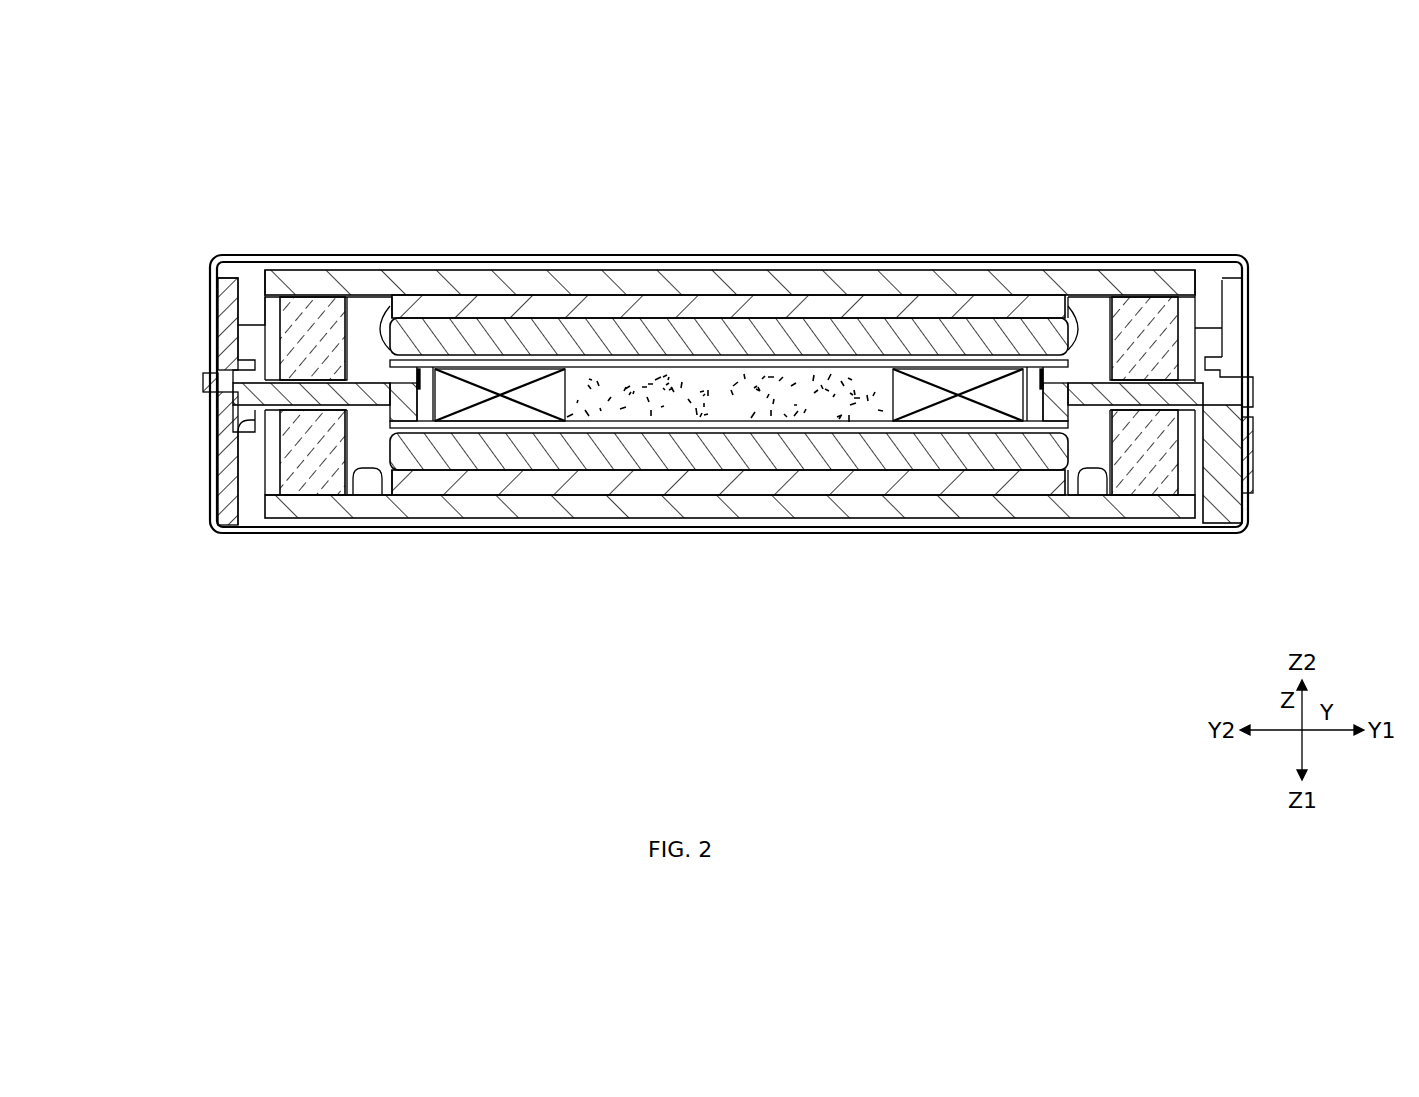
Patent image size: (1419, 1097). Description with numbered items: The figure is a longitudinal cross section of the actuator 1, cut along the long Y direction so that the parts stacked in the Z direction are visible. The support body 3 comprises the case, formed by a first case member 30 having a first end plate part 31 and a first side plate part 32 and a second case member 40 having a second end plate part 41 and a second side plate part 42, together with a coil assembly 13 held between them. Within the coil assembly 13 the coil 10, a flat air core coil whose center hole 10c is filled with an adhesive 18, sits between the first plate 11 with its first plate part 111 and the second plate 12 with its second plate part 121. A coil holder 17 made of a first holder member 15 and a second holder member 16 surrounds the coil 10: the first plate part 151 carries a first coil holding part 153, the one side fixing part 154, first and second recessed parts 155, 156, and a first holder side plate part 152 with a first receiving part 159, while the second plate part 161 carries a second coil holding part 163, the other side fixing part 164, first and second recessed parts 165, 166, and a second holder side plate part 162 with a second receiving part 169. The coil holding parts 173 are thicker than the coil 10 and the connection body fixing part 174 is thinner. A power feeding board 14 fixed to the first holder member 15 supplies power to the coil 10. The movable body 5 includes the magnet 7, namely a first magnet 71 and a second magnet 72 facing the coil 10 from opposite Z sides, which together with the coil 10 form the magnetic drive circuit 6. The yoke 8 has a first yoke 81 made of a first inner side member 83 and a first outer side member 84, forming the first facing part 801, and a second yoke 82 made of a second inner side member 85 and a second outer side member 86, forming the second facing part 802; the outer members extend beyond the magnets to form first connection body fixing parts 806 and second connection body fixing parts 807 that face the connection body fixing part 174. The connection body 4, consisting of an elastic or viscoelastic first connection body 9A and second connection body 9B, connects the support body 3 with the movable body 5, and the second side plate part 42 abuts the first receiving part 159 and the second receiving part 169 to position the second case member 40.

The actuator 1 is at (150, 115).
The support body 3 is at (205, 273).
The connection body 4 is at (729, 396).
The movable body 5 is at (450, 270).
The magnetic drive circuit 6 is at (612, 127).
The magnet 7 is at (637, 165).
The yoke 8 is at (938, 127).
The first connection body 9A is at (315, 480).
The second connection body 9B is at (340, 308).
The coil 10 is at (477, 380).
The center hole 10c is at (582, 400).
The first plate 11 is at (729, 424).
The second plate 12 is at (729, 363).
The coil assembly 13 is at (647, 430).
The power feeding board 14 is at (1255, 460).
The first holder member 15 is at (1345, 445).
The second holder member 16 is at (95, 445).
The coil holder 17 is at (310, 401).
The adhesive 18 is at (750, 387).
The first case member 30 is at (1162, 540).
The first end plate part 31 is at (818, 533).
The first side plate part 32 is at (1248, 513).
The second case member 40 is at (1218, 252).
The second end plate part 41 is at (1165, 265).
The second side plate part 42 is at (1248, 335).
The first magnet 71 is at (627, 440).
The second magnet 72 is at (562, 337).
The first yoke 81 is at (955, 165).
The second yoke 82 is at (858, 165).
The first inner side member 83 is at (912, 470).
The first outer side member 84 is at (958, 500).
The second inner side member 85 is at (840, 312).
The second outer side member 86 is at (793, 290).
The first plate part 111 is at (602, 417).
The second plate part 121 is at (718, 367).
The first plate part 151 is at (1163, 388).
The first holder side plate part 152 is at (1228, 447).
The first coil holding part 153 is at (1098, 437).
The one side fixing part 154 is at (1180, 528).
The first recessed part 155 is at (1090, 358).
The second recessed part 156 is at (1078, 483).
The first receiving part 159 is at (1253, 395).
The second plate part 161 is at (300, 398).
The second holder side plate part 162 is at (232, 443).
The second coil holding part 163 is at (414, 392).
The other side fixing part 164 is at (285, 465).
The first recessed part 165 is at (373, 355).
The second recessed part 166 is at (385, 413).
The second receiving part 169 is at (208, 385).
The coil holding parts 173 is at (311, 394).
The connection body fixing part 174 is at (228, 458).
The first facing part 801 is at (925, 518).
The second facing part 802 is at (1010, 270).
The first connection body fixing parts 806 is at (300, 510).
The second connection body fixing parts 807 is at (292, 278).